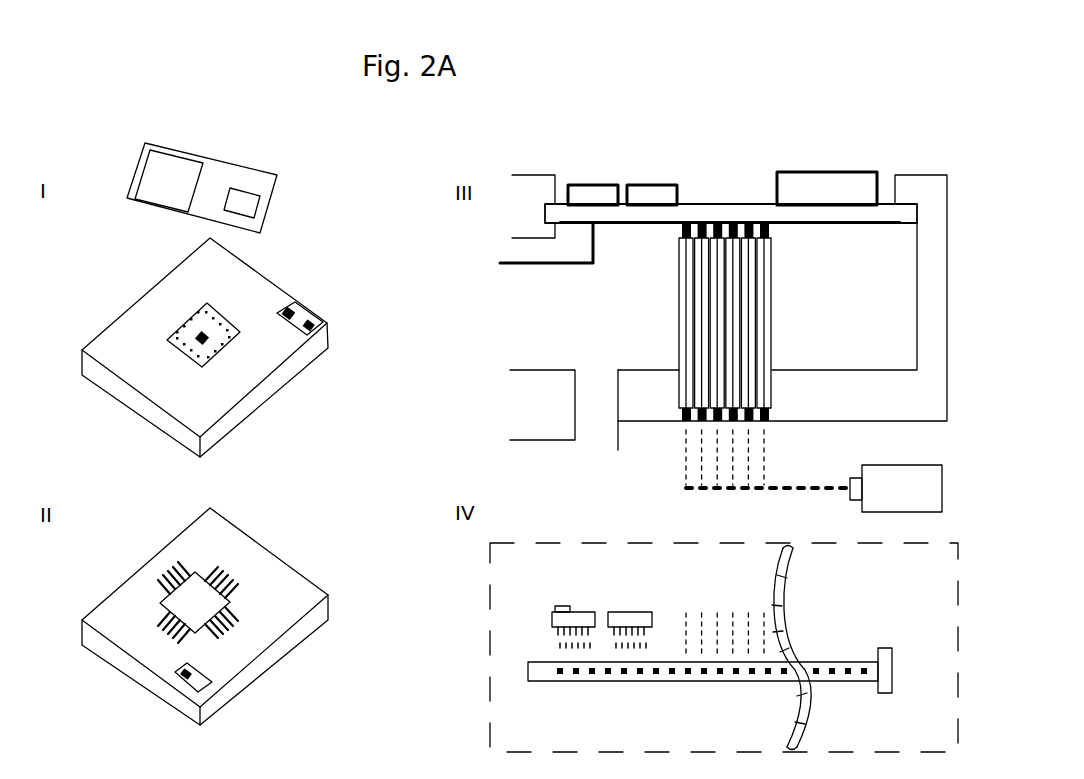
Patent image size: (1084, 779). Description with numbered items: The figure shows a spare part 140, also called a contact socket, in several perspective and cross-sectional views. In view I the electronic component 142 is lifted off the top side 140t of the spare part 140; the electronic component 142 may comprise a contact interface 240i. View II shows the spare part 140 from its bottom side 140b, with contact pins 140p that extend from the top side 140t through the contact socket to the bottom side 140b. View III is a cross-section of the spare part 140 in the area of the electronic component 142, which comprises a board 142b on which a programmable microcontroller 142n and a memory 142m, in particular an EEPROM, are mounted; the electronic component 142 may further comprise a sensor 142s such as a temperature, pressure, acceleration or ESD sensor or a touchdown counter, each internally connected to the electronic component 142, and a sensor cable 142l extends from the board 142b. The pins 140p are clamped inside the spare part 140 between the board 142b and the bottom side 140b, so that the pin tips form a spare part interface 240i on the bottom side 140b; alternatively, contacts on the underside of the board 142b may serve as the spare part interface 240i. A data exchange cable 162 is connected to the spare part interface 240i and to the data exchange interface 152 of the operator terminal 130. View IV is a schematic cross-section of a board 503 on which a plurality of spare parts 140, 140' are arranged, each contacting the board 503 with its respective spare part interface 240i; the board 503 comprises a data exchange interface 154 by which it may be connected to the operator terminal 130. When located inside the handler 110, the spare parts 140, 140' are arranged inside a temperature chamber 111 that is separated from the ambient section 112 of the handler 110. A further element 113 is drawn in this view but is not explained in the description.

The spare part 140 is at (514, 450).
The top side 140t is at (118, 330).
The bottom side 140b is at (118, 598).
The contact pins 140p is at (187, 673).
The electronic component 142 is at (268, 184).
The sensor cable 142l is at (570, 267).
The sensor 142s is at (590, 185).
The programmable microcontroller 142n is at (650, 185).
The board 142b is at (720, 203).
The memory 142m is at (838, 182).
The spare part interface 240i is at (227, 172).
The data exchange cable 162 is at (783, 486).
The data exchange interface 152 is at (855, 478).
The operator terminal 130 is at (903, 465).
The handler 110 is at (724, 661).
The temperature chamber 111 is at (516, 737).
The ambient section 112 is at (933, 562).
The spare part 140' is at (643, 591).
The board 503 is at (542, 672).
The data exchange interface 154 is at (883, 653).
The flexible conduit 113 is at (800, 690).